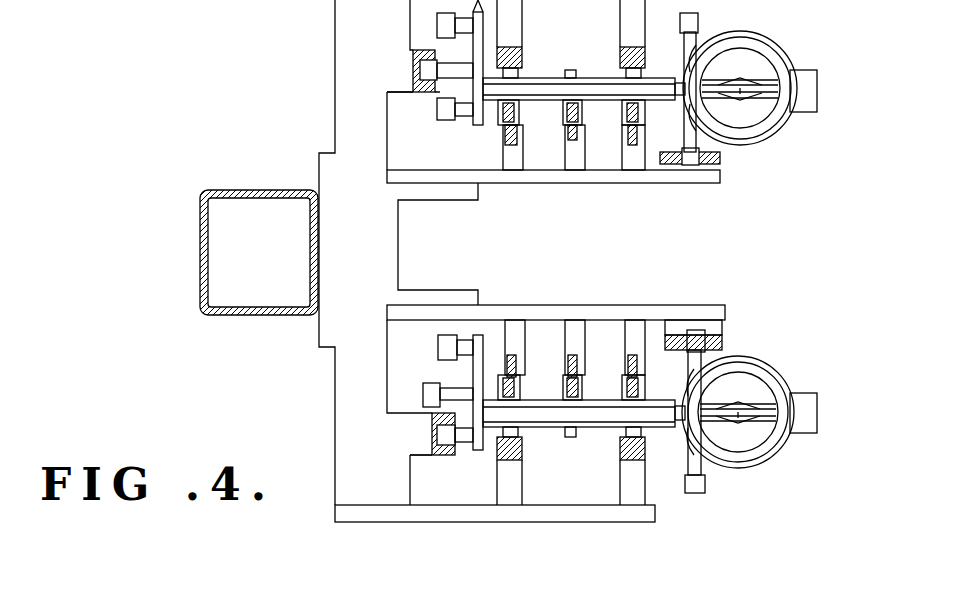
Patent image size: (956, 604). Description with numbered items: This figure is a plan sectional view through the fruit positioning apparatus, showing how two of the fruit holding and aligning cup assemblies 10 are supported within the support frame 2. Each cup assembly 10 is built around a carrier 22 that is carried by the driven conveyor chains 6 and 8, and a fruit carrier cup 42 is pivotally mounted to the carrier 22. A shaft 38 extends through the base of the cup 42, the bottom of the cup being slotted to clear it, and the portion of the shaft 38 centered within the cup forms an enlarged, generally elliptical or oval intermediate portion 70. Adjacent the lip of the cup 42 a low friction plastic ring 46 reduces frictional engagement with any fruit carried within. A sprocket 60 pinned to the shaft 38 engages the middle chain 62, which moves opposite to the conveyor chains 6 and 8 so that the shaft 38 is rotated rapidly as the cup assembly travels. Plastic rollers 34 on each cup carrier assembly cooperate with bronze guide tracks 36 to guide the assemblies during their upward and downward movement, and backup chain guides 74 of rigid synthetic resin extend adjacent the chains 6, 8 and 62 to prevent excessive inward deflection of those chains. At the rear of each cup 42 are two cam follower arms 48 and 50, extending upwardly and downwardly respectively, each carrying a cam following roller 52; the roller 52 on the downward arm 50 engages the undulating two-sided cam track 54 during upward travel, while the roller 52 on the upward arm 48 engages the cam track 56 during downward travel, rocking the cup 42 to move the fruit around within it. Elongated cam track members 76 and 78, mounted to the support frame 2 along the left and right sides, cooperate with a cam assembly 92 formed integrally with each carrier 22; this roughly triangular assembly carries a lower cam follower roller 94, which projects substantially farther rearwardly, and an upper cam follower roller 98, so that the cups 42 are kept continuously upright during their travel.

The support frame 2 is at (240, 190).
The driven chain 6 is at (628, 112).
The driven chain 8 is at (503, 110).
The fruit holding and aligning cup assembly 10 is at (789, 126).
The carrier 22 is at (552, 85).
The roller 34 is at (512, 75).
The guide track 36 is at (505, 55).
The shaft 38 is at (765, 80).
The fruit carrier cup 42 is at (750, 57).
The ring 46 is at (753, 135).
The cam follower arm 48 is at (670, 335).
The cam follower arm 50 is at (700, 135).
The cam following roller 52 is at (690, 165).
The cam track 54 is at (665, 165).
The cam track 56 is at (720, 345).
The sprocket 60 is at (570, 437).
The middle chain 62 is at (570, 110).
The intermediate portion 70 is at (728, 85).
The backup chain guide 74 is at (515, 140).
The elongated cam track member 76 is at (430, 455).
The elongated cam track member 78 is at (413, 68).
The cam assembly 92 is at (476, 455).
The lower cam follower roller 94 is at (430, 90).
The upper cam follower roller 98 is at (437, 428).